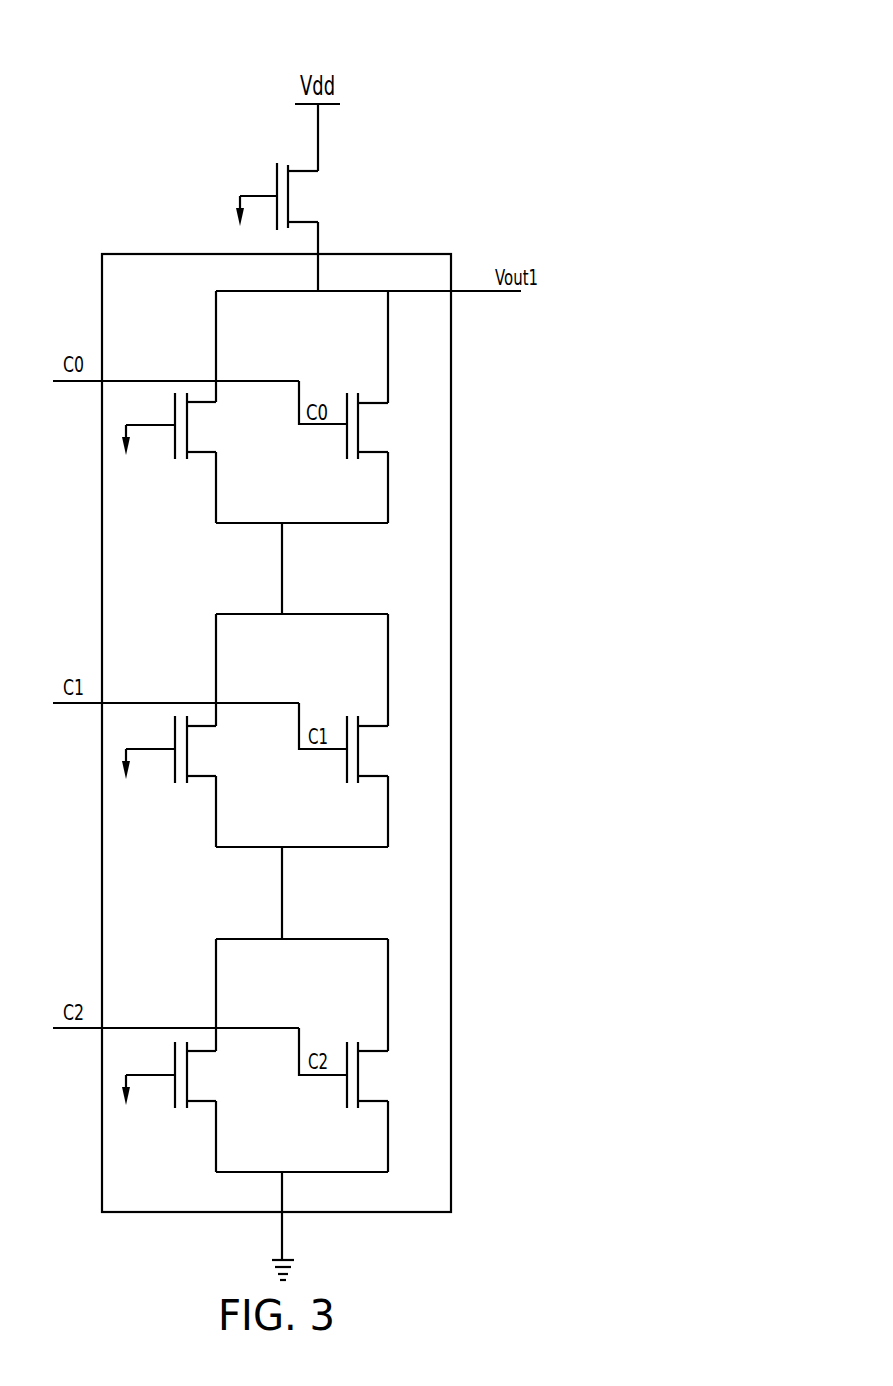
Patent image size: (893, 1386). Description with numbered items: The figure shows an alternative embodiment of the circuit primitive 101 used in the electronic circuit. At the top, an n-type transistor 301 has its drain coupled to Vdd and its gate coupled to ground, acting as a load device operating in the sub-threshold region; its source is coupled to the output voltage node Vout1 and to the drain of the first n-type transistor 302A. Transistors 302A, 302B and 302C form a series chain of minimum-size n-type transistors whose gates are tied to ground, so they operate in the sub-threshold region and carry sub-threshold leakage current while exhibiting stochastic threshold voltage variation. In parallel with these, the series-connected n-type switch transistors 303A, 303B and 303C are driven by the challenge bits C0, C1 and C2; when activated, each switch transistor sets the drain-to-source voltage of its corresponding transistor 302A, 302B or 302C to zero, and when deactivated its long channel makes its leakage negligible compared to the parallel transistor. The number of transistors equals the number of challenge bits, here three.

The circuit primitive 101 is at (335, 616).
The n-type transistor 301 is at (288, 196).
The first n-type transistor 302A is at (187, 425).
The n-type switch transistor 303A is at (358, 433).
The n-type transistor 302B is at (187, 749).
The n-type switch transistor 303B is at (358, 757).
The n-type transistor 302C is at (187, 1075).
The n-type switch transistor 303C is at (358, 1082).